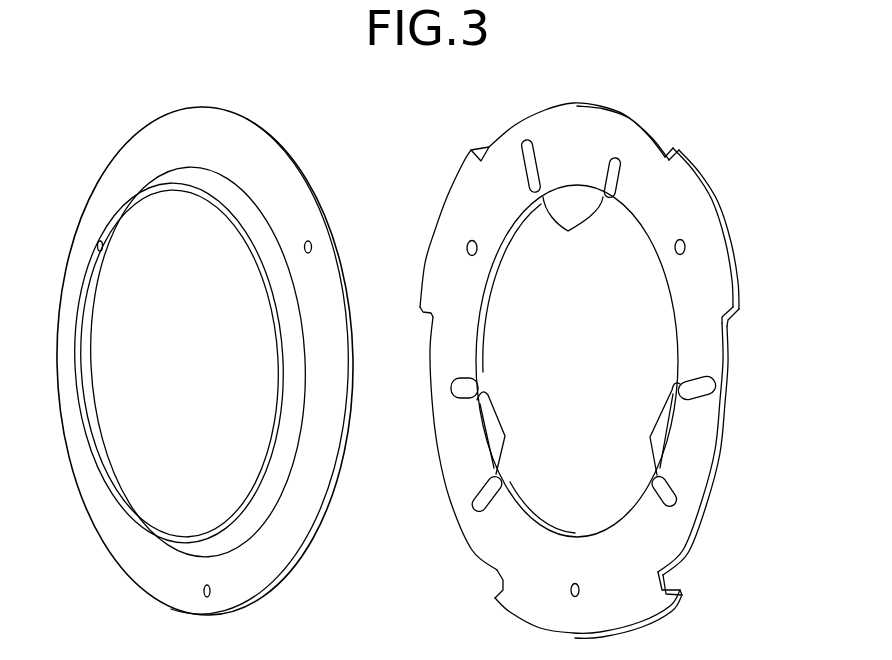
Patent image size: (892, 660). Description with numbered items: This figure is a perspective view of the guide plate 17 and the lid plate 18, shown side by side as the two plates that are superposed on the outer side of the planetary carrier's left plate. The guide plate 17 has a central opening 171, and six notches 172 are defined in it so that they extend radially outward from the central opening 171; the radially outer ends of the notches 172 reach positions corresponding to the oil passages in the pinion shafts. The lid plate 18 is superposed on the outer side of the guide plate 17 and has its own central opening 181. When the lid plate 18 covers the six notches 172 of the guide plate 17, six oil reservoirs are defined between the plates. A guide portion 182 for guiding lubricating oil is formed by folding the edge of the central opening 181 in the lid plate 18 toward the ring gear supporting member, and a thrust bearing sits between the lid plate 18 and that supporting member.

The guide plate 17 is at (657, 139).
The central opening 171 is at (557, 532).
The notches 172 is at (568, 232).
The lid plate 18 is at (293, 147).
The central opening 181 is at (280, 352).
The guide portion 182 is at (278, 467).